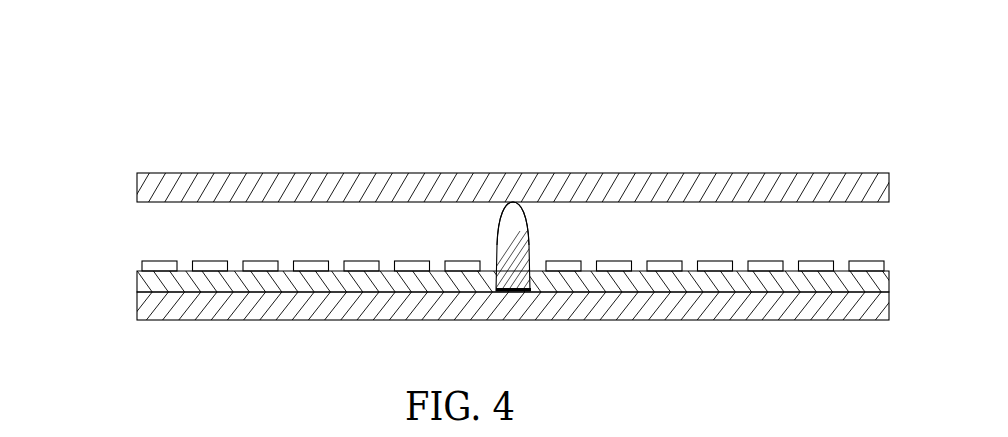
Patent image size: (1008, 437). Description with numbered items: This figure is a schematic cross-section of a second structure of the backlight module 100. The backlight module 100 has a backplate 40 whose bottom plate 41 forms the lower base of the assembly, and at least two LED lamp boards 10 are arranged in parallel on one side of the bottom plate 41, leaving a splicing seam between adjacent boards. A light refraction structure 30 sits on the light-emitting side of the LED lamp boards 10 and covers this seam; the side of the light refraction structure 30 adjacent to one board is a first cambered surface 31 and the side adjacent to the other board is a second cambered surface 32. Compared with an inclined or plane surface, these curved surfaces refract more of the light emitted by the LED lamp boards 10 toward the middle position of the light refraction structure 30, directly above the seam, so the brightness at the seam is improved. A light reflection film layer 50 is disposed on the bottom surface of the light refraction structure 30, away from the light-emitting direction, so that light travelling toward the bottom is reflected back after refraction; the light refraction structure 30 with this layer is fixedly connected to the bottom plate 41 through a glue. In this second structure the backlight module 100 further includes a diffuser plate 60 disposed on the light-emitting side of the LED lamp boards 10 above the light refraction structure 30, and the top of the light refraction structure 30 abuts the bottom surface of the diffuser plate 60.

The backlight module 100 is at (388, 167).
The diffuser plate 60 is at (646, 183).
The light refraction structure 30 is at (512, 208).
The first cambered surface 31 is at (494, 233).
The second cambered surface 32 is at (534, 232).
The LED lamp board 10 is at (132, 281).
The backplate 40 is at (472, 336).
The bottom plate 41 is at (246, 308).
The light reflection film layer 50 is at (503, 293).